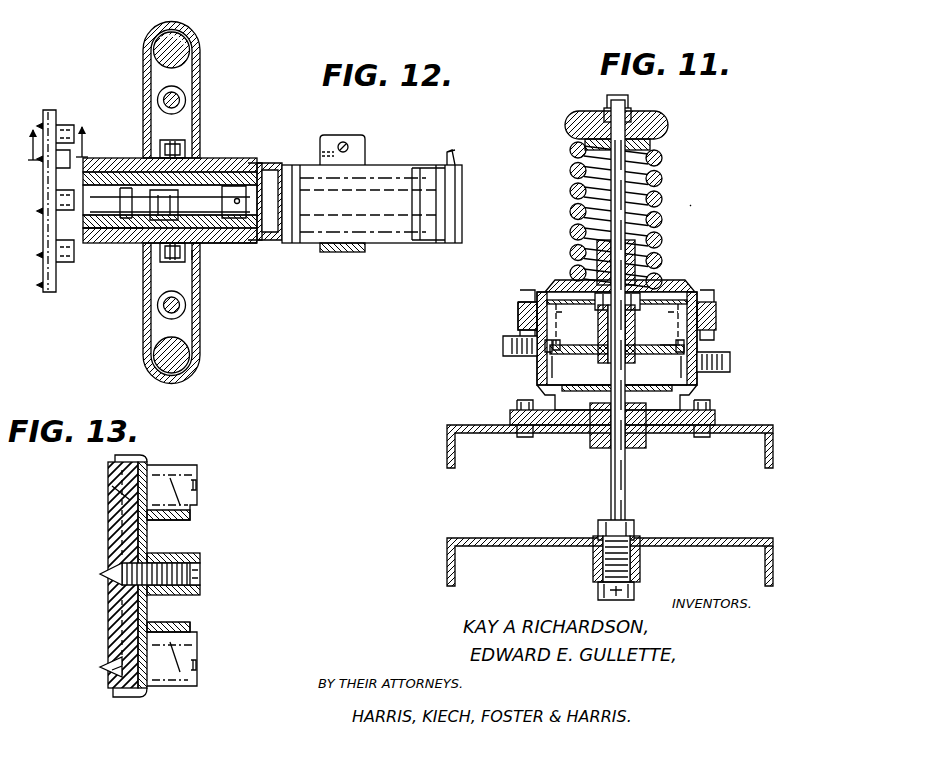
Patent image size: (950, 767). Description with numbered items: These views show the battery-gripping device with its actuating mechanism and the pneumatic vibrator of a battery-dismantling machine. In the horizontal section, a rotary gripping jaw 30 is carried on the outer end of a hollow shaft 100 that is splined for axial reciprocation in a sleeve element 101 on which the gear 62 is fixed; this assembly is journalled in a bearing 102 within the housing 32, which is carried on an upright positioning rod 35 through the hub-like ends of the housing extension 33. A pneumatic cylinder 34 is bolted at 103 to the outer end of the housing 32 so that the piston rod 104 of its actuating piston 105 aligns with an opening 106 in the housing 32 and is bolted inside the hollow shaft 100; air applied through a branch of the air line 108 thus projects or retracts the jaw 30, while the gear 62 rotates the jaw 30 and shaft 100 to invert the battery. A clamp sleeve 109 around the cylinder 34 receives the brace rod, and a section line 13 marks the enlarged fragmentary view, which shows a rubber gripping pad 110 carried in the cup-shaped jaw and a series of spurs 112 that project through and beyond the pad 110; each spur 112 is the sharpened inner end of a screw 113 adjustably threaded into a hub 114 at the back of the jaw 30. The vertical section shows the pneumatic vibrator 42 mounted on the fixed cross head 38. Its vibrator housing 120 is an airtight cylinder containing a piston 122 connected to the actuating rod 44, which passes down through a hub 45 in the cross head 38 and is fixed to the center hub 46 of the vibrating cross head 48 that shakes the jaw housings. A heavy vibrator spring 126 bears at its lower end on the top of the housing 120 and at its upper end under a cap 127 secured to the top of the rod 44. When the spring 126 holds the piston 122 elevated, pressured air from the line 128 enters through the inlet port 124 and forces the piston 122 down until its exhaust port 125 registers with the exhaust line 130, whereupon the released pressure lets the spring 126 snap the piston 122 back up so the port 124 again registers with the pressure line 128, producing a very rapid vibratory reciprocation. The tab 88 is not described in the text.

In FIG. 12, the section line 13— 13 is at (58, 149).
In FIG. 12, the rotary gripping jaw 30 is at (57, 113).
In FIG. 13, the rotary gripping jaw 30 is at (147, 458).
In FIG. 12, the housing 32 is at (236, 157).
In FIG. 12, the housing extension 33 is at (199, 88).
In FIG. 12, the pneumatic cylinder 34 is at (386, 165).
In FIG. 12, the positioning rod 35 is at (196, 37).
In FIG. 11, the cross head 38 is at (478, 413).
In FIG. 11, the pneumatic vibrator 42 is at (668, 231).
In FIG. 11, the actuating rod 44 is at (624, 490).
In FIG. 11, the hub 45 is at (600, 442).
In FIG. 11, the center hub 46 is at (634, 574).
In FIG. 11, the vibrating cross head 48 is at (556, 540).
In FIG. 12, the gear 62 is at (160, 260).
In FIG. 12, the mounting tab 88 is at (287, 148).
In FIG. 12, the hollow shaft 100 is at (198, 250).
In FIG. 12, the sleeve element 101 is at (204, 246).
In FIG. 12, the bearing 102 is at (100, 245).
In FIG. 12, the bolts 103 is at (276, 245).
In FIG. 12, the piston rod 104 is at (190, 160).
In FIG. 12, the actuating piston 105 is at (414, 228).
In FIG. 12, the opening 106 is at (248, 216).
In FIG. 12, the air line 108 is at (456, 151).
In FIG. 12, the clamp sleeve 109 is at (348, 253).
In FIG. 13, the rubber gripping pad 110 is at (108, 546).
In FIG. 13, the spurs 112 is at (122, 497).
In FIG. 13, the screw 113 is at (175, 560).
In FIG. 13, the hub 114 is at (175, 665).
In FIG. 11, the vibrator housing 120 is at (681, 285).
In FIG. 11, the piston 122 is at (648, 350).
In FIG. 11, the inlet port 124 is at (575, 334).
In FIG. 11, the exhaust port 125 is at (685, 345).
In FIG. 11, the vibrator spring 126 is at (660, 176).
In FIG. 11, the cap 127 is at (641, 118).
In FIG. 11, the pressure line 128 is at (503, 344).
In FIG. 11, the exhaust line 130 is at (728, 366).